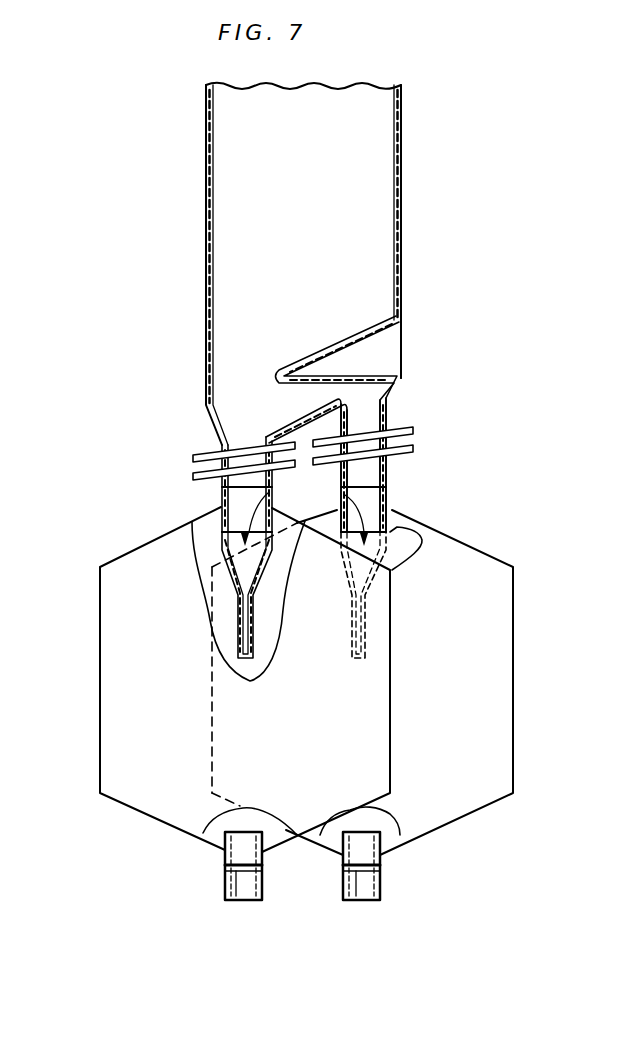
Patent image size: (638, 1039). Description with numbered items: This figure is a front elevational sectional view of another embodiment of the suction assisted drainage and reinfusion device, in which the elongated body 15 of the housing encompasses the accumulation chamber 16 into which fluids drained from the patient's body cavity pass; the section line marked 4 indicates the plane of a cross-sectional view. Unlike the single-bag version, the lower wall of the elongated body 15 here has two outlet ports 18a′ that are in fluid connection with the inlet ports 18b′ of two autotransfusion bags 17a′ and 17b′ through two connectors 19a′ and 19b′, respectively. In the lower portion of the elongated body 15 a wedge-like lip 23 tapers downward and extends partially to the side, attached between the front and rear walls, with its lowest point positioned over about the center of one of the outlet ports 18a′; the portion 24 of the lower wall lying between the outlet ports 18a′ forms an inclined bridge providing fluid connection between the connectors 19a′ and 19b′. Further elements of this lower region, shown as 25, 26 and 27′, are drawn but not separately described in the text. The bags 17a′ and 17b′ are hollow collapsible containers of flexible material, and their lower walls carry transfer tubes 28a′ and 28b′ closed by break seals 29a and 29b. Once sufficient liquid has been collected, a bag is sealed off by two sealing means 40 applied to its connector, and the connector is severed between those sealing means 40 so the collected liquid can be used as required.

The elongated body 15 is at (403, 113).
The accumulation chamber 16 is at (318, 180).
The section line 4- 4 is at (170, 151).
The wedge-like lip 23 is at (383, 358).
The portion of the lower wall 24 is at (305, 421).
The partition wall 25 is at (278, 372).
The chamber wall 26 is at (402, 337).
The inclined baffle plate 27′ is at (343, 336).
The outlet ports 18a′ is at (352, 403).
The inlet ports 18b′ is at (338, 496).
The connector 19a′ is at (215, 436).
The connector 19b′ is at (398, 413).
The sealing means 40 is at (193, 474).
The autotransfusion bag 17a′ is at (100, 741).
The autotransfusion bag 17b′ is at (513, 673).
The first bag bottom spout 28a′ is at (230, 868).
The second bag bottom spout 28b′ is at (380, 870).
The first spout closure 29a is at (250, 868).
The second spout closure 29b is at (363, 900).